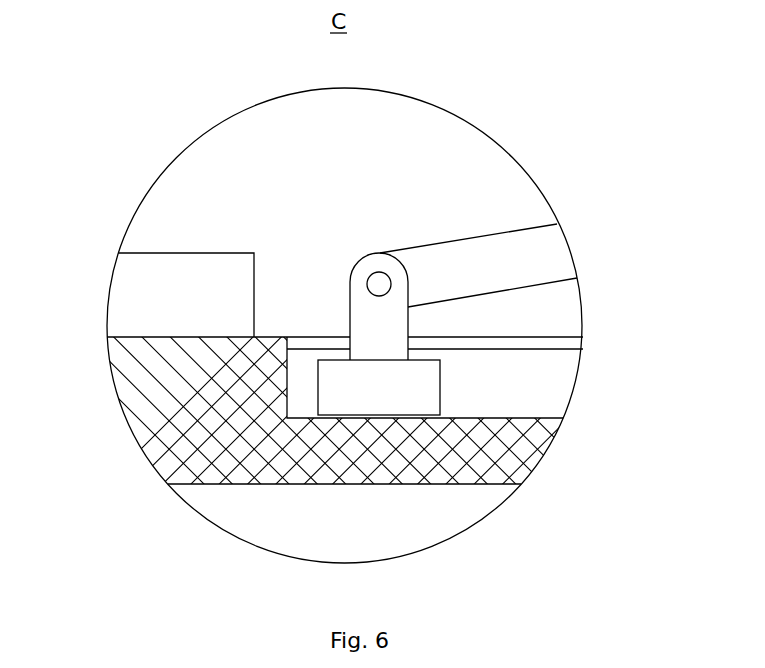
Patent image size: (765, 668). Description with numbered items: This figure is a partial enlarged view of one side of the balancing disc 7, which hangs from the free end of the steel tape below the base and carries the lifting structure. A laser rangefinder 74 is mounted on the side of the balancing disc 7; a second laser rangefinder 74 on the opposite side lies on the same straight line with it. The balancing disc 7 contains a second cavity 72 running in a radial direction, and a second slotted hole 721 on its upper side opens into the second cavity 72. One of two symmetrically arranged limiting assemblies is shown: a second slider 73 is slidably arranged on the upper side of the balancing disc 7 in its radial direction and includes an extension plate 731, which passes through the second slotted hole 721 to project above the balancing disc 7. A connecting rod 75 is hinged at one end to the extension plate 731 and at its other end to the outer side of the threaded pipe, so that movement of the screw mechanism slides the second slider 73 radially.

The balancing disc 7 is at (188, 422).
The second cavity 72 is at (520, 387).
The second slotted hole 721 is at (553, 343).
The second slider 73 is at (393, 400).
The extension plate 731 is at (365, 303).
The laser rangefinder 74 is at (182, 283).
The connecting rod 75 is at (492, 255).